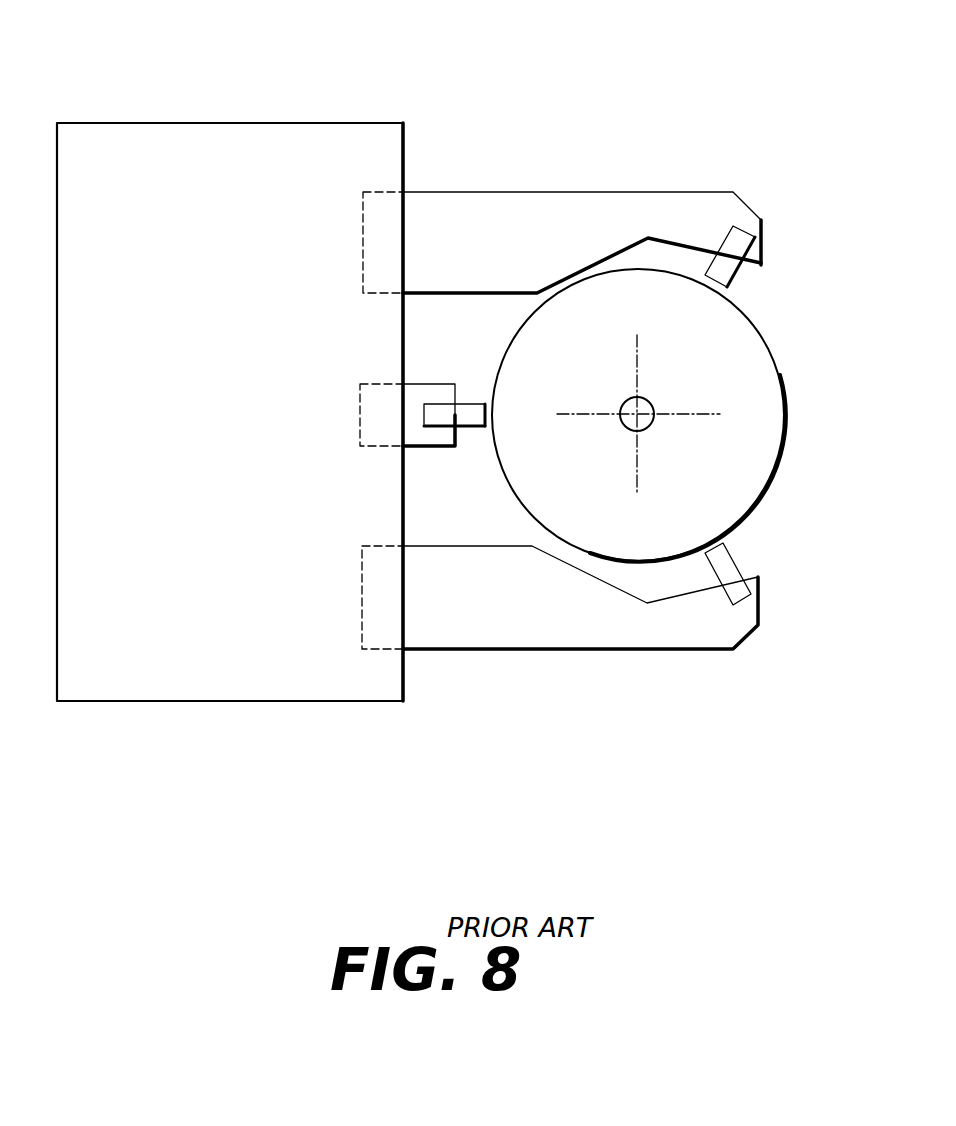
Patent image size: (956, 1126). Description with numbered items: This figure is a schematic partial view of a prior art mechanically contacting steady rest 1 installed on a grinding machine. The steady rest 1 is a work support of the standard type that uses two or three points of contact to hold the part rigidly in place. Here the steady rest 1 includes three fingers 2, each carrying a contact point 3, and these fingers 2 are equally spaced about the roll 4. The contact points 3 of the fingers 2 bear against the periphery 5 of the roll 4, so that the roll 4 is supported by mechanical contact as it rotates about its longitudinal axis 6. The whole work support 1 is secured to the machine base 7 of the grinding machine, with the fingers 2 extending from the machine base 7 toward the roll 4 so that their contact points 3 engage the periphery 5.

The steady rest 1 is at (692, 93).
The fingers 2 is at (500, 192).
The contact points 3 is at (730, 268).
The roll 4 is at (795, 496).
The periphery 5 is at (783, 373).
The longitudinal axis 6 is at (640, 418).
The machine base 7 is at (367, 142).